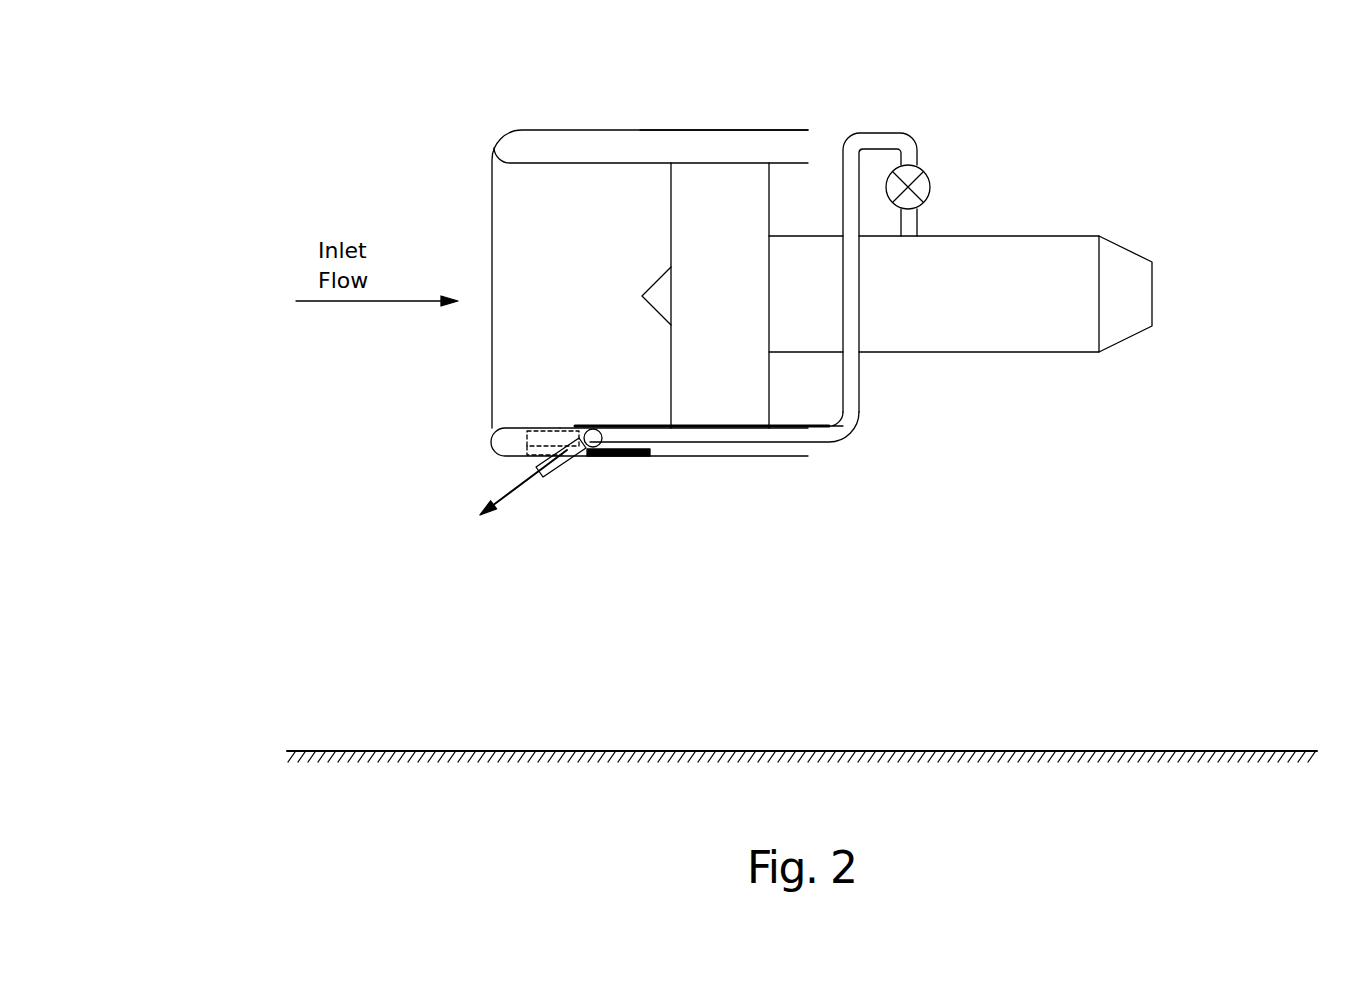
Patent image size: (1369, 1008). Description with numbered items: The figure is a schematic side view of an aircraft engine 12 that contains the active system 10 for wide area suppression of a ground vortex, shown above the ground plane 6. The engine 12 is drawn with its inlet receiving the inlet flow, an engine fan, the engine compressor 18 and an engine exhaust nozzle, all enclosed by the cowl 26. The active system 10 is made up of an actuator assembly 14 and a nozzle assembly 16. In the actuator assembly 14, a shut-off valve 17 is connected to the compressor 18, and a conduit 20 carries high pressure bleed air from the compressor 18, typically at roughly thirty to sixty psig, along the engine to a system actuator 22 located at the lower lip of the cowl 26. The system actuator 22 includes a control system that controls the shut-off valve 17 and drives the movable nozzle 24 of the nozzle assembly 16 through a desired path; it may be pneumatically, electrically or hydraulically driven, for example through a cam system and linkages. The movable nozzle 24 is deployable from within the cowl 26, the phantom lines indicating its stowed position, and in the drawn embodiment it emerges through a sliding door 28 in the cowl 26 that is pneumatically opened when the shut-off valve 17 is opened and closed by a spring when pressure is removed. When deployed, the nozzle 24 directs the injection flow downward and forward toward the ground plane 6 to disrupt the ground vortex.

The ground plane 6 is at (1097, 751).
The active system 10 is at (582, 470).
The aircraft engine 12 is at (572, 126).
The actuator assembly 14 is at (562, 429).
The nozzle assembly 16 is at (560, 456).
The shut-off valve 17 is at (935, 181).
The compressor 18 is at (987, 352).
The conduit 20 is at (862, 398).
The system actuator 22 is at (590, 430).
The movable nozzle 24 is at (553, 470).
The cowl 26 is at (705, 130).
The sliding door 28 is at (633, 457).